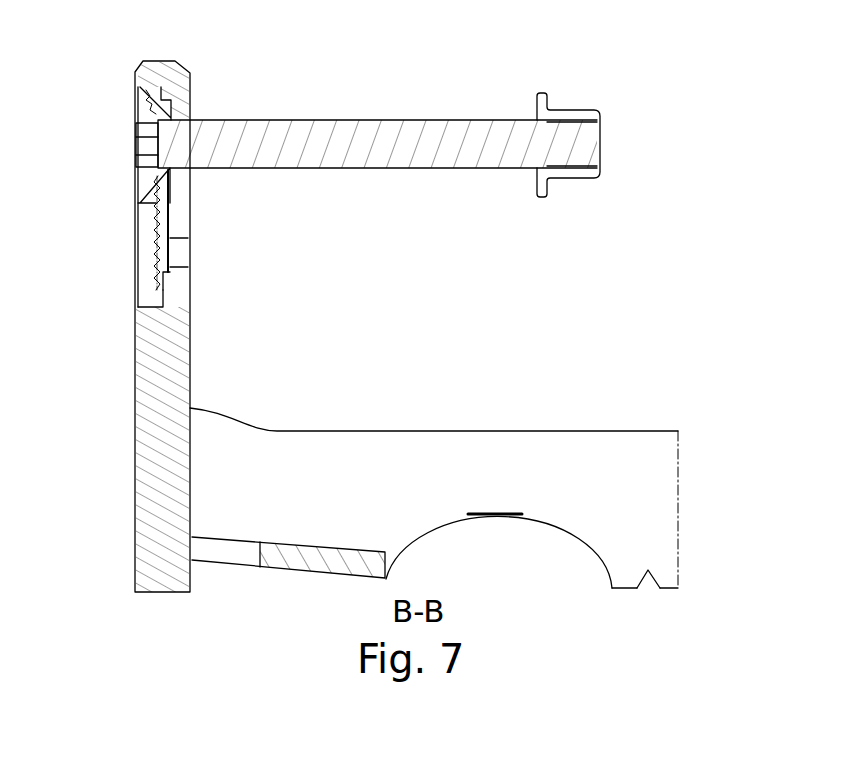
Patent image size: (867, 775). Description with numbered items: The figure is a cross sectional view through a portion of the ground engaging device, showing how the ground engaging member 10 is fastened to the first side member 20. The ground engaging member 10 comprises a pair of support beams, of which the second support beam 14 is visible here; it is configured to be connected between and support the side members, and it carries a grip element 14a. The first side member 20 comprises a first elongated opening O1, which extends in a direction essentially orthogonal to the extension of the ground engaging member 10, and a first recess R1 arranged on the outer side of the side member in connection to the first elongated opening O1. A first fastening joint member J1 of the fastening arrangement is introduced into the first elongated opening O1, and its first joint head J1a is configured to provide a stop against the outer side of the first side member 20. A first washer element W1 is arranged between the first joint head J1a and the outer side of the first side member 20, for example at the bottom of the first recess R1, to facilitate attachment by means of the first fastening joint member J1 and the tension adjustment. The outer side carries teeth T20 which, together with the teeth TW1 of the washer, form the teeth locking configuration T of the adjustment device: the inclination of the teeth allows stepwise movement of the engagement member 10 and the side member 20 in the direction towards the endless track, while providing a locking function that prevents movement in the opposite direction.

The first side member 20 is at (131, 534).
The first fastening joint member J1 is at (396, 118).
The first joint head J1a is at (153, 93).
The first washer element W1 is at (155, 205).
The teeth of washer TW1 is at (170, 188).
The teeth of first side member T20 is at (157, 242).
The first recess R1 is at (142, 283).
The first elongated opening O1 is at (178, 252).
The teeth locking configuration T is at (164, 278).
The second support beam 14 is at (388, 430).
The ground engaging member 10 is at (591, 427).
The grip element 14a is at (638, 591).